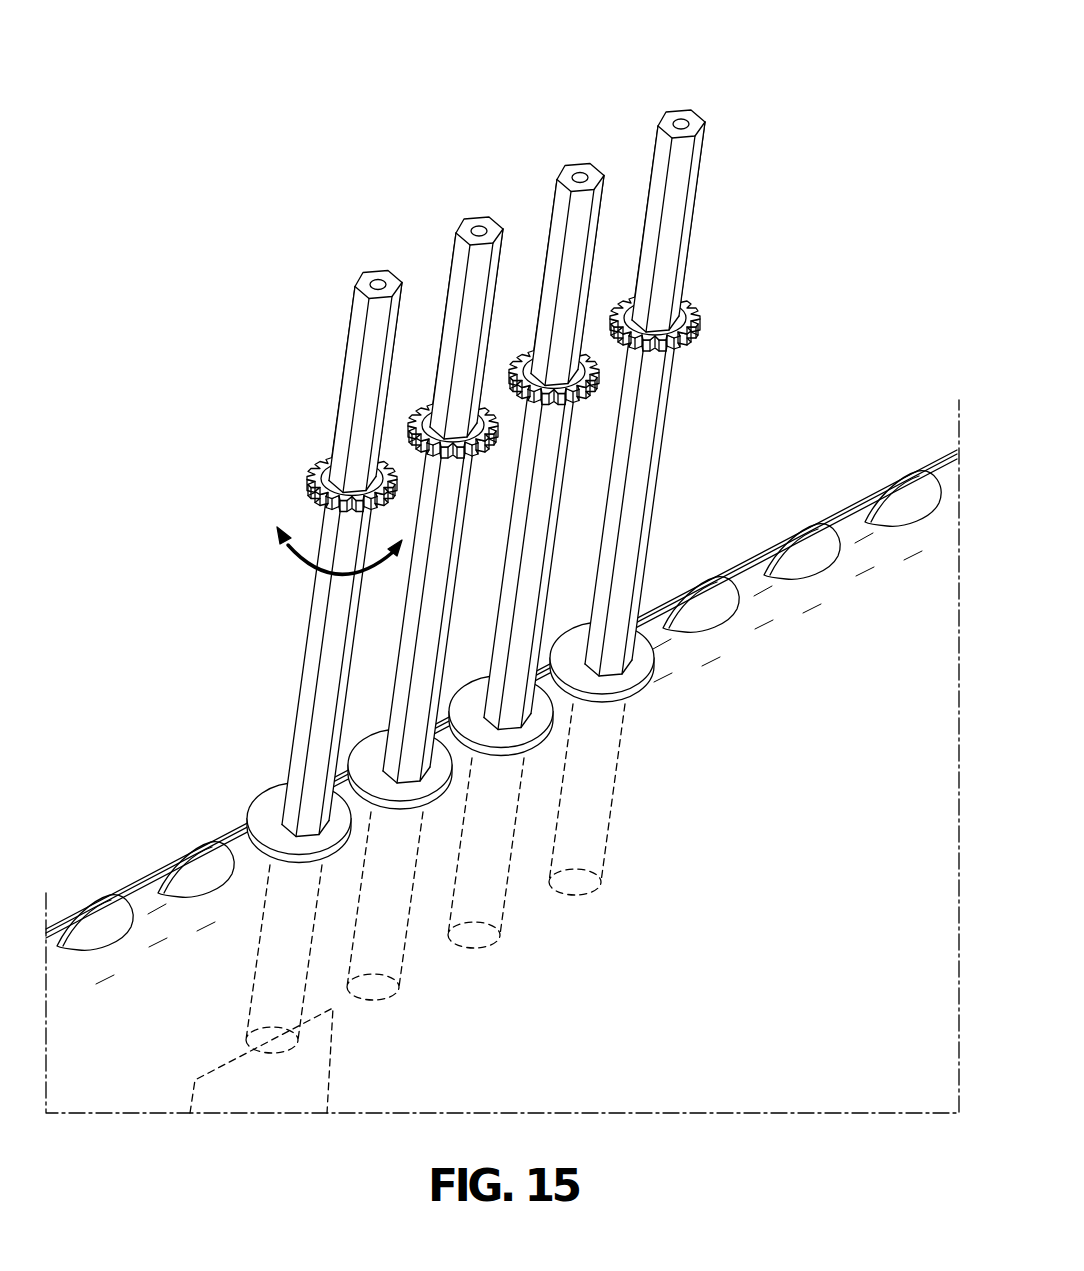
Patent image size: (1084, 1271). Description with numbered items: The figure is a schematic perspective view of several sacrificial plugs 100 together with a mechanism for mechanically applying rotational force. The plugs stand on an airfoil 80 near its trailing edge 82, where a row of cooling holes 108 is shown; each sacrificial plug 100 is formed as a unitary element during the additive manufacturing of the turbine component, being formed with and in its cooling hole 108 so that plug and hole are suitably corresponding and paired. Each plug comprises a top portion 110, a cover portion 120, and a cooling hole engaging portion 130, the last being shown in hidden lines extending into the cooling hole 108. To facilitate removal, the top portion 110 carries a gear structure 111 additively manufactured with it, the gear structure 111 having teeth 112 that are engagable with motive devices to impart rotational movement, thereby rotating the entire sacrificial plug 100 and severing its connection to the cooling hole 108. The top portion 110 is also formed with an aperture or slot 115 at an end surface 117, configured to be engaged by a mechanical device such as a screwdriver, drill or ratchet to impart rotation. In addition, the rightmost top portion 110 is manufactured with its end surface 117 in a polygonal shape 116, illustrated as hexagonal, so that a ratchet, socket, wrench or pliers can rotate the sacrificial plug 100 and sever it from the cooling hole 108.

The airfoil 80 is at (731, 1042).
The trailing edge 82 is at (842, 510).
The sacrificial plug 100 is at (276, 567).
The cooling hole 108 is at (910, 527).
The top portion 110 is at (548, 457).
The gear structure 111 is at (684, 318).
The teeth 112 is at (688, 306).
The slot 115 is at (477, 216).
The polygonal shape 116 is at (540, 186).
The end surface 117 is at (684, 118).
The cover portion 120 is at (250, 800).
The cooling hole engaging portion 130 is at (297, 970).